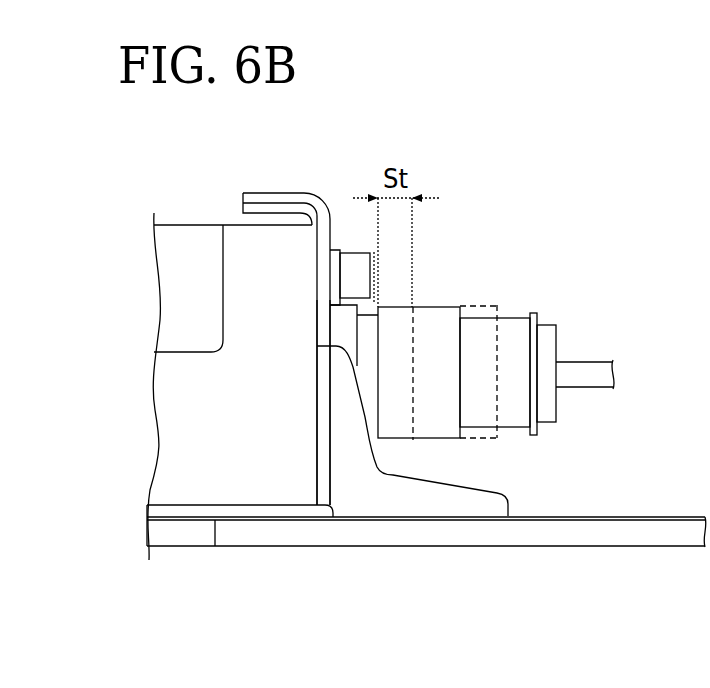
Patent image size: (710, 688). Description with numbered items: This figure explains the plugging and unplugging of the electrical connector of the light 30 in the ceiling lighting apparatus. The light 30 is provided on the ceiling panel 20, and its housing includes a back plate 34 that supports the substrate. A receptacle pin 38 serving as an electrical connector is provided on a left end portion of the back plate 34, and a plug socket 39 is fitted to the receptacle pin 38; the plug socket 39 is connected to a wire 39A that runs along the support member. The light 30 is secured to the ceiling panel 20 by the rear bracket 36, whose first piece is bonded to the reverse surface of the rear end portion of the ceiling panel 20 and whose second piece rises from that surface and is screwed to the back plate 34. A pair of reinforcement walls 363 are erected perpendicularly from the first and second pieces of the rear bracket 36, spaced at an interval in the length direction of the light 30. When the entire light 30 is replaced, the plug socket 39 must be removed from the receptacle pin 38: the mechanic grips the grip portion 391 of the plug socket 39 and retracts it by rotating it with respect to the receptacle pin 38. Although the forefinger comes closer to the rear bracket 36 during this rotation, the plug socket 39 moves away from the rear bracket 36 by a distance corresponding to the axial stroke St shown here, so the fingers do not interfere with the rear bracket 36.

The ceiling panel 20 is at (593, 547).
The light 30 is at (188, 203).
The back plate 34 is at (317, 428).
The rear bracket 36 is at (530, 505).
The reinforcement wall 363 is at (357, 497).
The receptacle pin 38 is at (372, 252).
The plug socket 39 is at (513, 317).
The grip portion 391 is at (410, 440).
The wire 39A is at (583, 362).